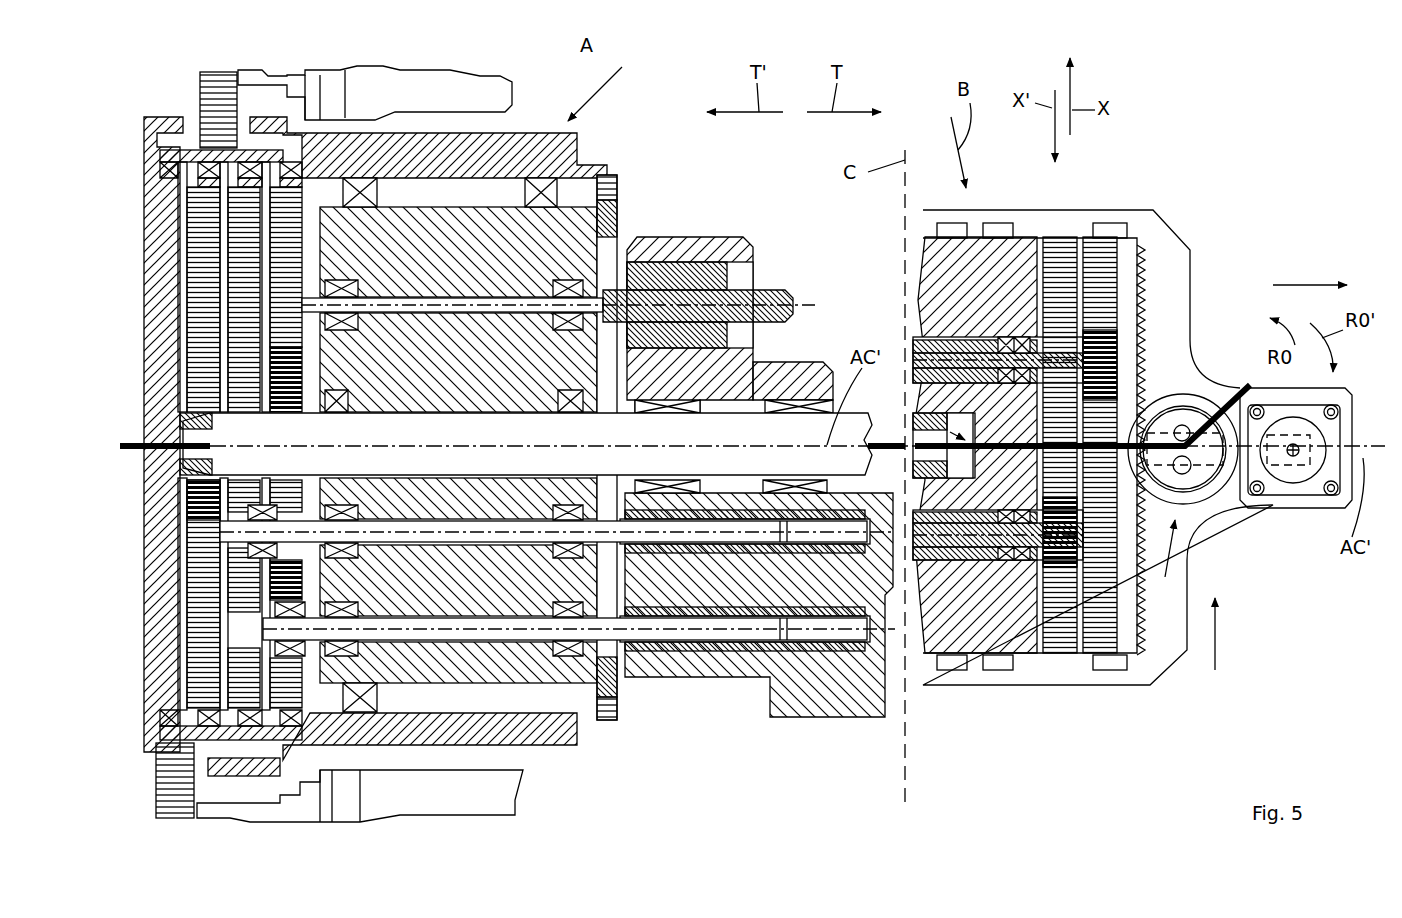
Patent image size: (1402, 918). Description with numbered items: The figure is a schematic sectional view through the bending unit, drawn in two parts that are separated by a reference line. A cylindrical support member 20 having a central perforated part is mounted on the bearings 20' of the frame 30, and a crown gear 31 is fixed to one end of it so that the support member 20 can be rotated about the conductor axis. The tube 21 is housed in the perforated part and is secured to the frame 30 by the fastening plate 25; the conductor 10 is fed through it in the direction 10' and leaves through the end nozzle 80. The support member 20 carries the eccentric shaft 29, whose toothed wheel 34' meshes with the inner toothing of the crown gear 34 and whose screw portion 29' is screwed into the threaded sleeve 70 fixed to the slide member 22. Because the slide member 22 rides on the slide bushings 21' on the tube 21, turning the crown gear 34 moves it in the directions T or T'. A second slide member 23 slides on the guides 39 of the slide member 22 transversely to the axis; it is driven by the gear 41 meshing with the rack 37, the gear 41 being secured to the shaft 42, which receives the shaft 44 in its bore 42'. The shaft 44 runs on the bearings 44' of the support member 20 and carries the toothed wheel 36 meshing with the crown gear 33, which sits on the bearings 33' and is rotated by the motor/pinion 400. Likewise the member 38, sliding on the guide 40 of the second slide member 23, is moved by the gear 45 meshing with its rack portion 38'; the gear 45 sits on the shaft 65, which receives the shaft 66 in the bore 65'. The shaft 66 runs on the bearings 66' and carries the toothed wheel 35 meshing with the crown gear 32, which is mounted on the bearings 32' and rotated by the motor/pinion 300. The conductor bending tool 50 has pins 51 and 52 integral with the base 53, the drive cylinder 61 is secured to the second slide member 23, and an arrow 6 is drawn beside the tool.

The feed direction arrow 6 is at (1215, 632).
The conductor 10 is at (734, 426).
The feeding direction 10' is at (1310, 262).
The support member 20 is at (440, 483).
The bearings 20' is at (450, 192).
The tube 21 is at (479, 438).
The slide bushings 21' is at (734, 446).
The slide member 22 is at (787, 377).
The second slide member 23 is at (1058, 225).
The fastening plate 25 is at (155, 205).
The shaft 29 is at (315, 372).
The screw portion 29' is at (558, 278).
The frame 30 is at (545, 150).
The crown gear 31 is at (612, 188).
The crown gear 32 is at (173, 649).
The bearings 32' is at (190, 105).
The crown gear 33 is at (194, 723).
The bearings 33' is at (231, 137).
The crown gear 34 is at (159, 299).
The toothed wheel 34' is at (194, 299).
The toothed wheel 35 is at (210, 531).
The toothed wheel 36 is at (240, 640).
The rack 37 is at (1065, 640).
The member 38 is at (1141, 417).
The first rack portion 38' is at (1090, 410).
The guides 39 is at (952, 670).
The guide 40 is at (1110, 670).
The gear 41 is at (1060, 555).
The shaft 42 is at (885, 663).
The bore 42' is at (746, 698).
The shaft 44 is at (579, 685).
The bearings 44' is at (450, 654).
The gear 45 is at (1117, 350).
The conductor bending tool 50 is at (1183, 501).
The pin 51 is at (1185, 474).
The pin 52 is at (1180, 425).
The base 53 is at (1208, 470).
The drive cylinder 61 is at (1300, 497).
The shaft 65 is at (975, 429).
The bore 65' is at (837, 493).
The shaft 66 is at (557, 502).
The bearings 66' is at (396, 502).
The threaded sleeve 70 is at (690, 275).
The end nozzle 80 is at (940, 420).
The motor/pinion 300 is at (438, 810).
The motor/pinion 400 is at (443, 88).